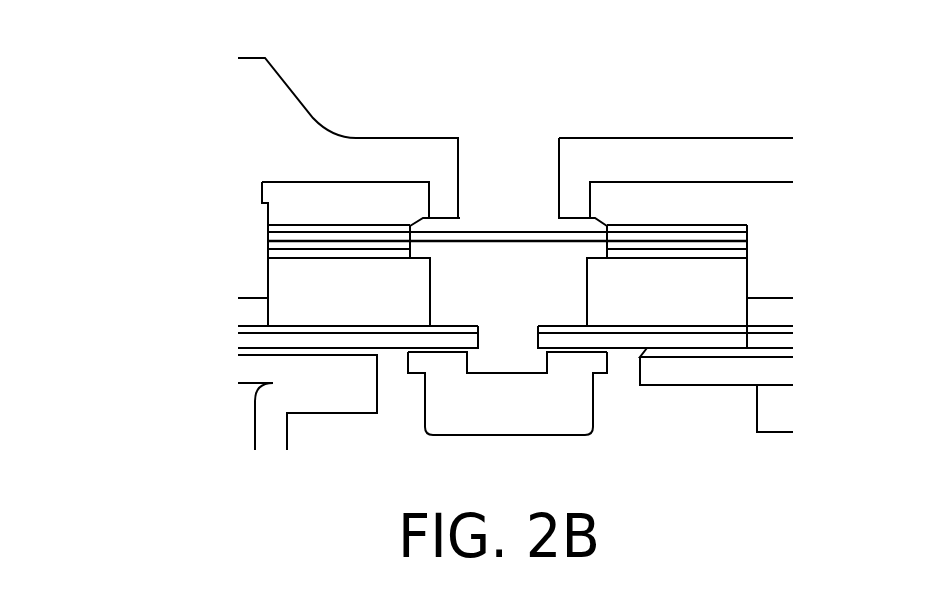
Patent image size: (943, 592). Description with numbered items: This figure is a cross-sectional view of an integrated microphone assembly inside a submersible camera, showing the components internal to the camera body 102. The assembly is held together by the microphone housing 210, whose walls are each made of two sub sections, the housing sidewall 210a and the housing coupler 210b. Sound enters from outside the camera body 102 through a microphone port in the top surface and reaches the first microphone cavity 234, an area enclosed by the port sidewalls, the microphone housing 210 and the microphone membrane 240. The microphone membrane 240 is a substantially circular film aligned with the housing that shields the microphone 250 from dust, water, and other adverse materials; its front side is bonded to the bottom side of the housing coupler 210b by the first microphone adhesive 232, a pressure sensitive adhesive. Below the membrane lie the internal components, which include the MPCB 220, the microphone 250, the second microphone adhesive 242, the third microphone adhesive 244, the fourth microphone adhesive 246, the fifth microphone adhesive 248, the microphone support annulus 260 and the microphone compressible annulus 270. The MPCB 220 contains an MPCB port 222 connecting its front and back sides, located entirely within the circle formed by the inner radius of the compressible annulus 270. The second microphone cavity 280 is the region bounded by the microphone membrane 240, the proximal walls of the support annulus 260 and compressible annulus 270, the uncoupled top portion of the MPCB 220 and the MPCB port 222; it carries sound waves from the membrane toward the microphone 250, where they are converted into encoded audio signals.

The camera body 102 is at (670, 162).
The microphone housing 210 is at (120, 98).
The housing sidewall 210a is at (255, 222).
The housing coupler 210b is at (303, 200).
The MPCB 220 is at (553, 340).
The MPCB port 222 is at (510, 338).
The first microphone adhesive 232 is at (742, 223).
The first microphone cavity 234 is at (498, 202).
The microphone membrane 240 is at (537, 230).
The second microphone adhesive 242 is at (747, 238).
The third microphone adhesive 244 is at (747, 263).
The fourth microphone adhesive 246 is at (302, 333).
The fifth microphone adhesive 248 is at (430, 352).
The microphone 250 is at (447, 413).
The microphone support annulus 260 is at (267, 252).
The microphone compressible annulus 270 is at (277, 308).
The second microphone cavity 280 is at (573, 270).